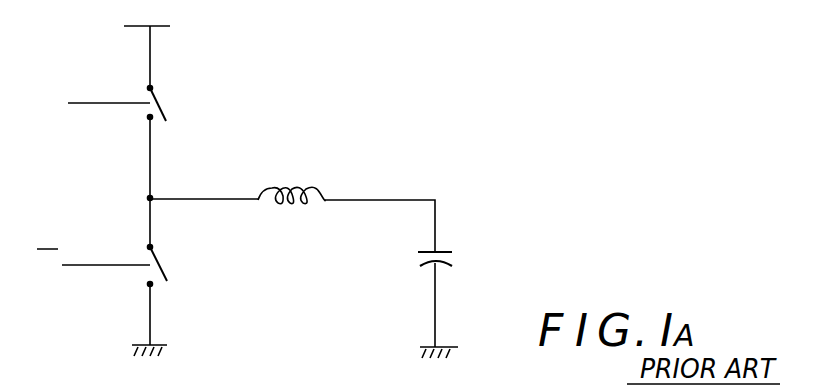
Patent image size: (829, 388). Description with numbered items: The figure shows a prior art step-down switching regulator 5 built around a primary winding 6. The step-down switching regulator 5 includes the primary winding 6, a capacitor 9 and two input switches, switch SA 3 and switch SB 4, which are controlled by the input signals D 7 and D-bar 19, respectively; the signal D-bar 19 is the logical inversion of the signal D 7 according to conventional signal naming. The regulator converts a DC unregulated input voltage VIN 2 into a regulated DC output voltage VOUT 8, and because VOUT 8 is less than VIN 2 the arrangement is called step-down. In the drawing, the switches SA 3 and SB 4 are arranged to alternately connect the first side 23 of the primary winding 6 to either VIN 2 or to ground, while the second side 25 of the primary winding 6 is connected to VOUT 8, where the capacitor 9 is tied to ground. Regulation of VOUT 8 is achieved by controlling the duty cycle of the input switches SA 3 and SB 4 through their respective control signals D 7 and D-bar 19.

The input voltage VIN 2 is at (212, 18).
The input switch SA 3 is at (168, 101).
The input switch SB 4 is at (169, 263).
The step-down switching regulator 5 is at (428, 112).
The primary winding 6 is at (295, 186).
The input signal D 7 is at (64, 111).
The output voltage VOUT 8 is at (487, 191).
The capacitor 9 is at (457, 259).
The input signal D-bar 19 is at (60, 275).
The first side of primary winding 23 is at (256, 201).
The second side of primary winding 25 is at (349, 201).